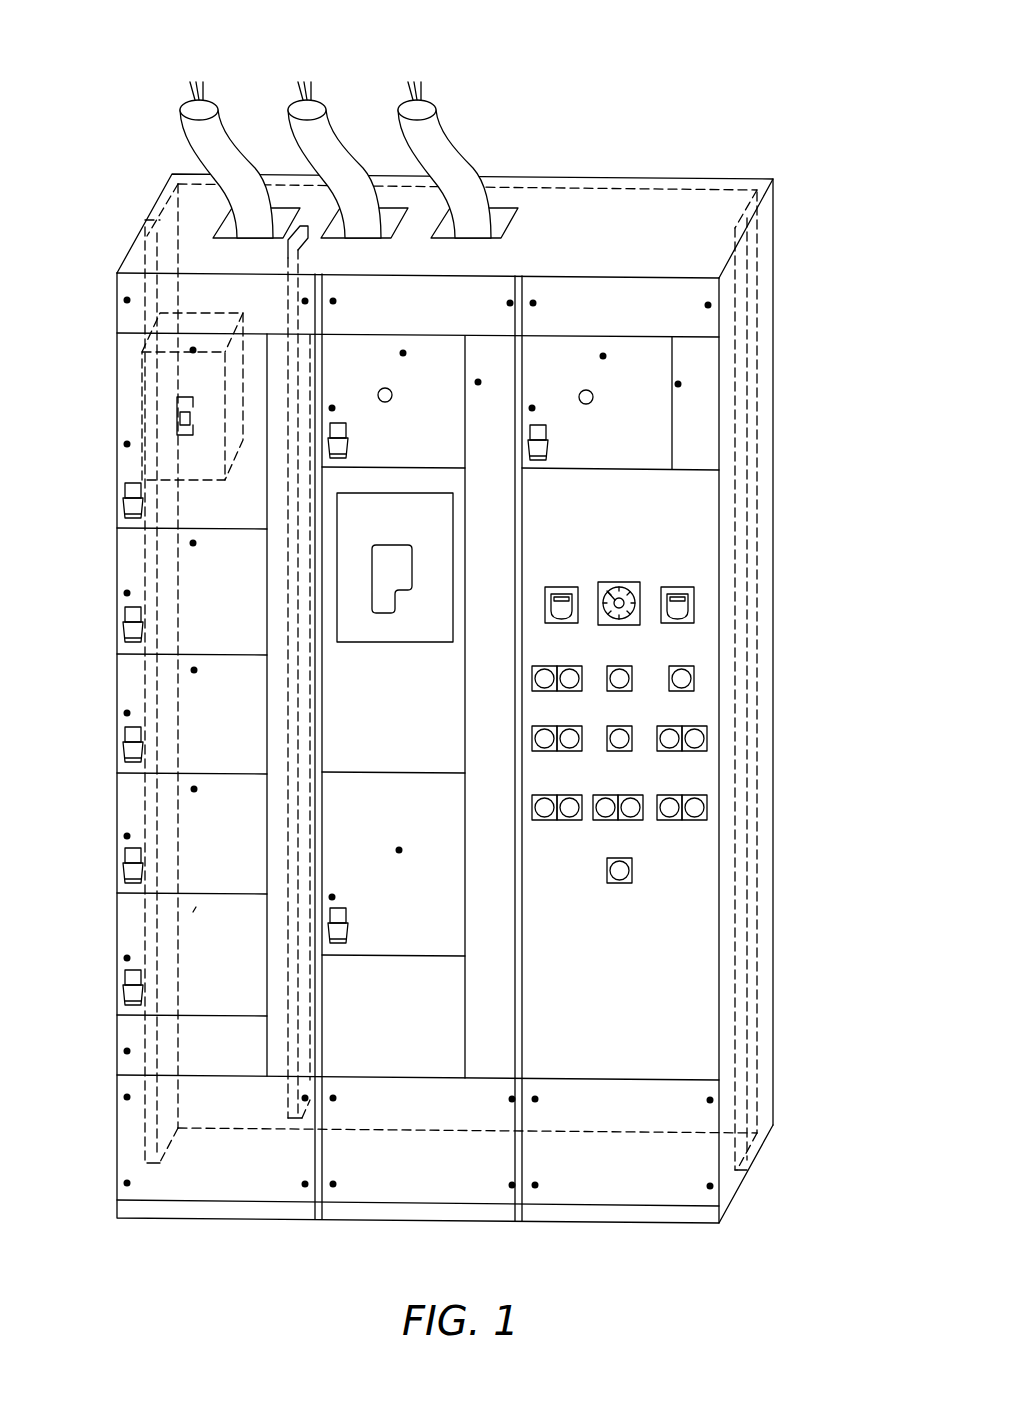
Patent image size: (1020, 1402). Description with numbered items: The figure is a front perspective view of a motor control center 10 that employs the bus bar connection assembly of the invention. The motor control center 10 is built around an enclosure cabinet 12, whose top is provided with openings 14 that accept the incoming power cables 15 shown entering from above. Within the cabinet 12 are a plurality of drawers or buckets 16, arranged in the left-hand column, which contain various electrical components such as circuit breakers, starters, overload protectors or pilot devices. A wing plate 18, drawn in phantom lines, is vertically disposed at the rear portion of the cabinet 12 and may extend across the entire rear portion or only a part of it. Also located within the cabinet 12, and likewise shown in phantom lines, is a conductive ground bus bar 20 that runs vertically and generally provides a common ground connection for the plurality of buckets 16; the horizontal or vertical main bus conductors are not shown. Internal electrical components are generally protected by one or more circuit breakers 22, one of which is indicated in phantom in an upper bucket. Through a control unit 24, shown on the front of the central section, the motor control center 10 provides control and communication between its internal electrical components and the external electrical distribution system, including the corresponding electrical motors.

The motor control center 10 is at (445, 611).
The enclosure cabinet 12 is at (727, 292).
The openings 14 is at (518, 181).
The incoming power cables 15 is at (435, 133).
The buckets 16 is at (125, 360).
The wing plate 18 is at (147, 1147).
The ground bus bar 20 is at (300, 260).
The circuit breaker 22 is at (140, 393).
The control unit 24 is at (400, 642).